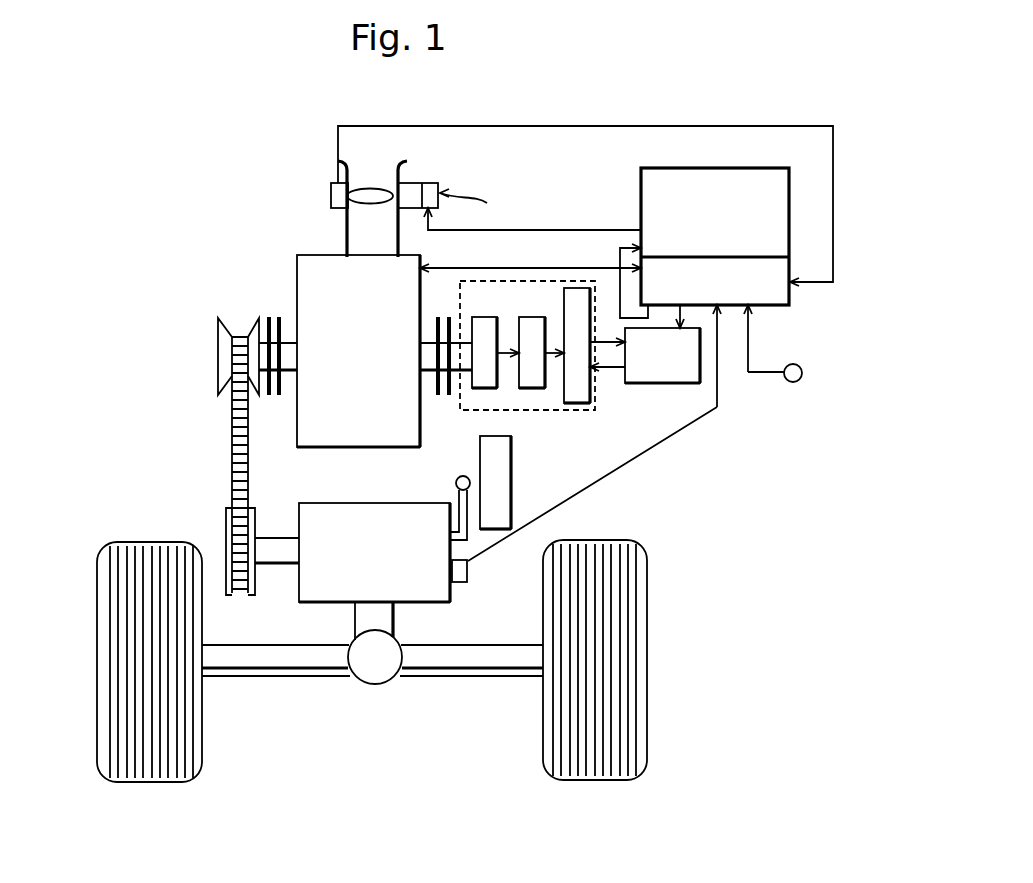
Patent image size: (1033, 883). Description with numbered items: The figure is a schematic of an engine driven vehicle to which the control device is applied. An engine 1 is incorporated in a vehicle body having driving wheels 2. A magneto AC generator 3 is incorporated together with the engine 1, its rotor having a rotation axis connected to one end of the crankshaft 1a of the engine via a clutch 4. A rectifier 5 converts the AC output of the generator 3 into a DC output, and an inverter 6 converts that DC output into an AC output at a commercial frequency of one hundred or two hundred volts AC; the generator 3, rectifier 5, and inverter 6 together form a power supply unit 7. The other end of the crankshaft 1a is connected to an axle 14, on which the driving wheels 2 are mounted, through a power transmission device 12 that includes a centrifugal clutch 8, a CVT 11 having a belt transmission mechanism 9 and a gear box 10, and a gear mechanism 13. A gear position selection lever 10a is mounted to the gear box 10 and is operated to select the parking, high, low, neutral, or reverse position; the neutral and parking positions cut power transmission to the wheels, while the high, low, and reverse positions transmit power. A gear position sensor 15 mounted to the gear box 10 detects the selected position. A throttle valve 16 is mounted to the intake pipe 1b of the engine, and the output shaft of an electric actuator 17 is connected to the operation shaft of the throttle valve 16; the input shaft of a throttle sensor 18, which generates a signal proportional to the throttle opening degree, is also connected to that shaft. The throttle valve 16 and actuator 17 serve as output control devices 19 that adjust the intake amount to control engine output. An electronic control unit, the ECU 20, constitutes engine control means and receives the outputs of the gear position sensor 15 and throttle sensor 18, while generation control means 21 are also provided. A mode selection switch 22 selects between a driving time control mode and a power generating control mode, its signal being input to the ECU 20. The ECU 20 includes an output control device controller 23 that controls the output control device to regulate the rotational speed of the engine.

The engine 1 is at (297, 253).
The crankshaft 1a is at (288, 377).
The intake pipe 1b is at (347, 228).
The driving wheels 2 is at (158, 540).
The magneto AC generator 3 is at (472, 317).
The clutch 4 is at (440, 398).
The rectifier 5 is at (522, 388).
The inverter 6 is at (563, 292).
The power supply unit 7 is at (596, 385).
The centrifugal clutch 8 is at (268, 315).
The belt transmission mechanism 9 is at (228, 418).
The gear box 10 is at (324, 503).
The gear position selection lever 10a is at (456, 480).
The CVT (continuously variable transmission) 11 is at (228, 463).
The power transmission device 12 is at (287, 587).
The gear mechanism 13 is at (391, 659).
The axle 14 is at (258, 676).
The gear position sensor 15 is at (460, 583).
The throttle valve 16 is at (371, 189).
The electric actuator 17 is at (411, 183).
The throttle sensor 18 is at (333, 184).
The output control devices 19 is at (482, 203).
The electronic control unit (ECU) 20 is at (763, 307).
The generation control means 21 is at (643, 385).
The mode selection switch 22 is at (788, 383).
The output control device controller 23 is at (718, 168).